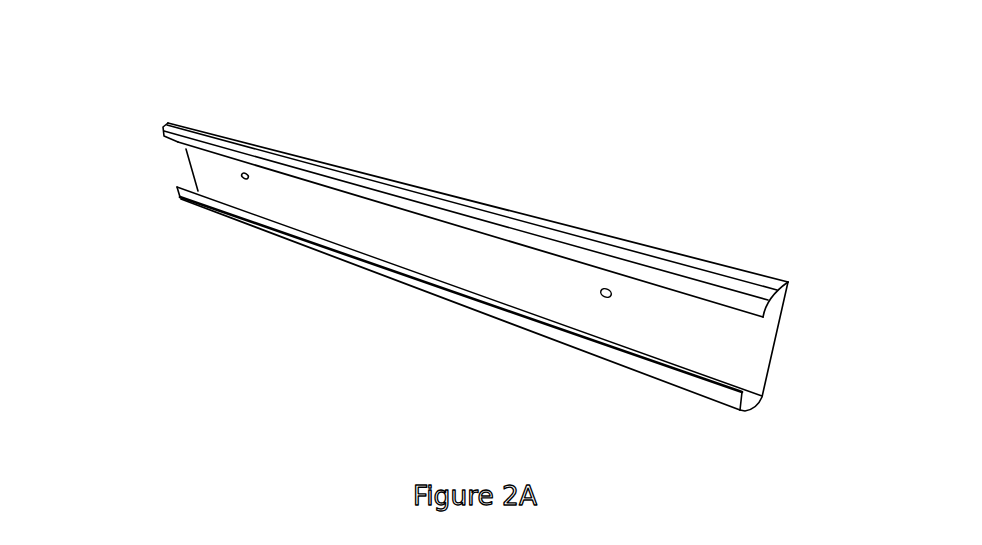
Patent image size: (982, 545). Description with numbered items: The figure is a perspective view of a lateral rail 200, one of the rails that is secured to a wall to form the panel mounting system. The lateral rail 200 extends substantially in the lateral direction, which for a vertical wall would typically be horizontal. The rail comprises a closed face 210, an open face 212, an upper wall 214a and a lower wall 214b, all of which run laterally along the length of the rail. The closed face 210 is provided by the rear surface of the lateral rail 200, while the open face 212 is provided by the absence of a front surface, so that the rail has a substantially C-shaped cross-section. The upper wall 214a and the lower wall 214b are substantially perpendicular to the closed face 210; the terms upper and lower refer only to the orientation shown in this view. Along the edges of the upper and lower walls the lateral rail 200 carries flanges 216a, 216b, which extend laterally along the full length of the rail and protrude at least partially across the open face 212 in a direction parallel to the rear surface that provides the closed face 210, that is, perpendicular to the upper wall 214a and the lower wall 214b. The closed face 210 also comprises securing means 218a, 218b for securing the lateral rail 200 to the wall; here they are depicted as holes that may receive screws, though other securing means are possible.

The lateral rail 200 is at (464, 238).
The closed face 210 is at (740, 345).
The open face 212 is at (181, 167).
The upper wall 214a is at (479, 202).
The lower wall 214b is at (320, 252).
The flange 216a is at (330, 183).
The flange 216b is at (457, 292).
The securing means 218a is at (243, 179).
The securing means 218b is at (604, 300).